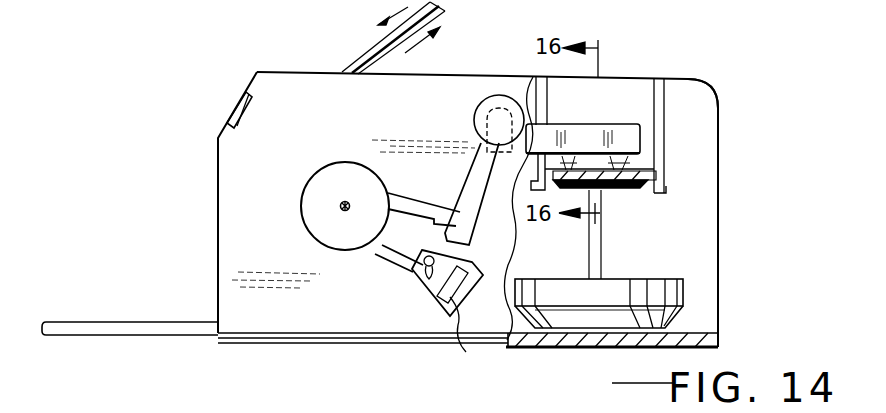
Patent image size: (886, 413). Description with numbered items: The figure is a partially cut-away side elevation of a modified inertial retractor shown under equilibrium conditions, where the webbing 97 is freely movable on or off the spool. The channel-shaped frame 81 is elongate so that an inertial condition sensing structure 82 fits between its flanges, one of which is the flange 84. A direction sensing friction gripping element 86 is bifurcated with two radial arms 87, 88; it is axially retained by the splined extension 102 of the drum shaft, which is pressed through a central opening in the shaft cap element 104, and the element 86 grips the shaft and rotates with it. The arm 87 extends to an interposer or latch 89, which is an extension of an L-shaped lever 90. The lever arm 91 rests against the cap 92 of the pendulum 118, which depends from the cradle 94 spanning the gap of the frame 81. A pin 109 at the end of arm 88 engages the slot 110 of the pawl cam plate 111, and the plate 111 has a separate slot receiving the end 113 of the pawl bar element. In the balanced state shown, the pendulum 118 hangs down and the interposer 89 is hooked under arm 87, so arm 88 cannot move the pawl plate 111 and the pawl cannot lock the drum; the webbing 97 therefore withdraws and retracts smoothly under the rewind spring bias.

The frame 81 is at (203, 332).
The condition sensing structure 82 is at (690, 180).
The flange 84 is at (218, 176).
The friction gripping element 86 is at (334, 158).
The arm 87 is at (413, 207).
The arm 88 is at (388, 255).
The interposer 89 is at (472, 212).
The L-shaped lever 90 is at (476, 107).
The lever arm 91 is at (587, 130).
The cap 92 is at (615, 162).
The cradle 94 is at (660, 113).
The webbing 97 is at (372, 53).
The splined extension 102 is at (340, 205).
The shaft cap element 104 is at (320, 236).
The pin 109 is at (425, 275).
The slot 110 is at (430, 290).
The pawl cam plate 111 is at (472, 286).
The end of the pawl bar element 113 is at (474, 343).
The pendulum 118 is at (612, 290).